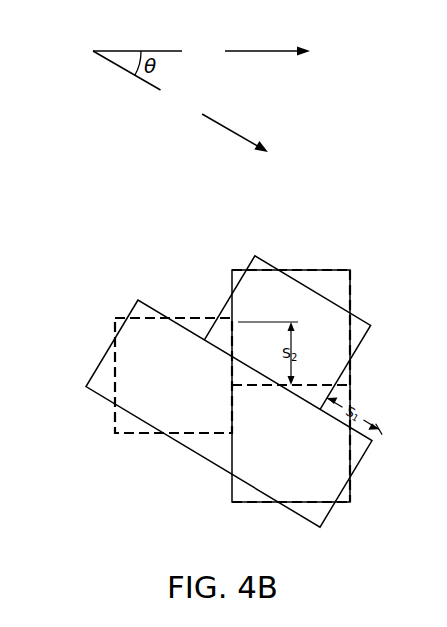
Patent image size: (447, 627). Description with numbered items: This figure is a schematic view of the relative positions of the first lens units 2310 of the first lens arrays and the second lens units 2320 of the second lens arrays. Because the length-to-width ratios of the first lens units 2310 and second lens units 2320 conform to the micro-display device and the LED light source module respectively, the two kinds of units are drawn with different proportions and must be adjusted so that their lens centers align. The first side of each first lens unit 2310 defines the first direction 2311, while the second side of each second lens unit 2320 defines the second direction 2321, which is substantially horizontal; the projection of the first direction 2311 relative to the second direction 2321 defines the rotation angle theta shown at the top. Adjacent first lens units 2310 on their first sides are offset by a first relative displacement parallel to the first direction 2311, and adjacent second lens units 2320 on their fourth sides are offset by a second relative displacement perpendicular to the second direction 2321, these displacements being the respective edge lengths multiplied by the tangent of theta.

The first lens unit 2310 is at (138, 300).
The second lens unit 2320 is at (132, 436).
The first direction 2311 is at (180, 101).
The second direction 2321 is at (201, 51).